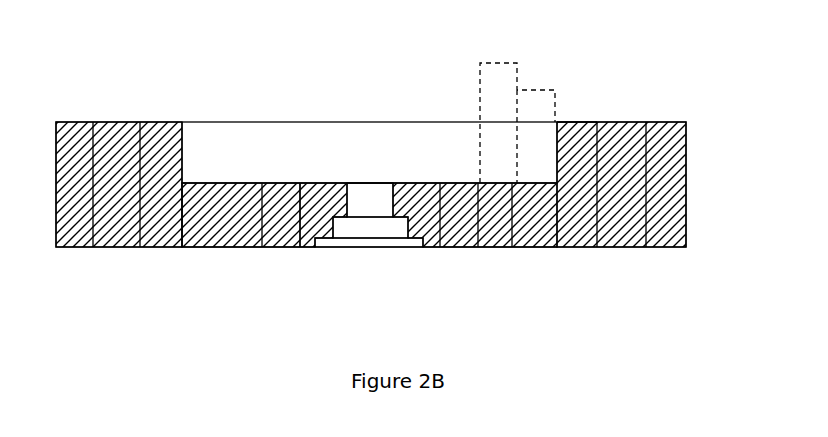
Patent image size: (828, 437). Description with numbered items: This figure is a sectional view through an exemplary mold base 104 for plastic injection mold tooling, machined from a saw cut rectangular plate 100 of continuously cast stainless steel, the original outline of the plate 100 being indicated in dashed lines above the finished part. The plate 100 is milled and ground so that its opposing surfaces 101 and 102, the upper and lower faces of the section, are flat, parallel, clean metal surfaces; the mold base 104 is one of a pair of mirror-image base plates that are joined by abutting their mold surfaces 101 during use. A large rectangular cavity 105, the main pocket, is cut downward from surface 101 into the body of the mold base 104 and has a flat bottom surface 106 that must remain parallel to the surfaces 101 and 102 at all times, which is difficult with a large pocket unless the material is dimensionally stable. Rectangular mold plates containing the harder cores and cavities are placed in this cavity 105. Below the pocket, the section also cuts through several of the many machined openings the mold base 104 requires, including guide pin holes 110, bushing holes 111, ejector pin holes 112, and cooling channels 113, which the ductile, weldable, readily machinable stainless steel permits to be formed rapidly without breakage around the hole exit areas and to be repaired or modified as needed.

The rectangular plate 100 is at (505, 55).
The opposing surface 101 is at (112, 122).
The opposing surface 102 is at (227, 227).
The mold base 104 is at (586, 115).
The rectangular cavity 105 is at (213, 142).
The flat bottom surface 106 is at (318, 198).
The guide pin holes 110 is at (686, 122).
The bushing holes 111 is at (377, 240).
The ejector pin holes 112 is at (315, 240).
The cooling channels 113 is at (198, 233).